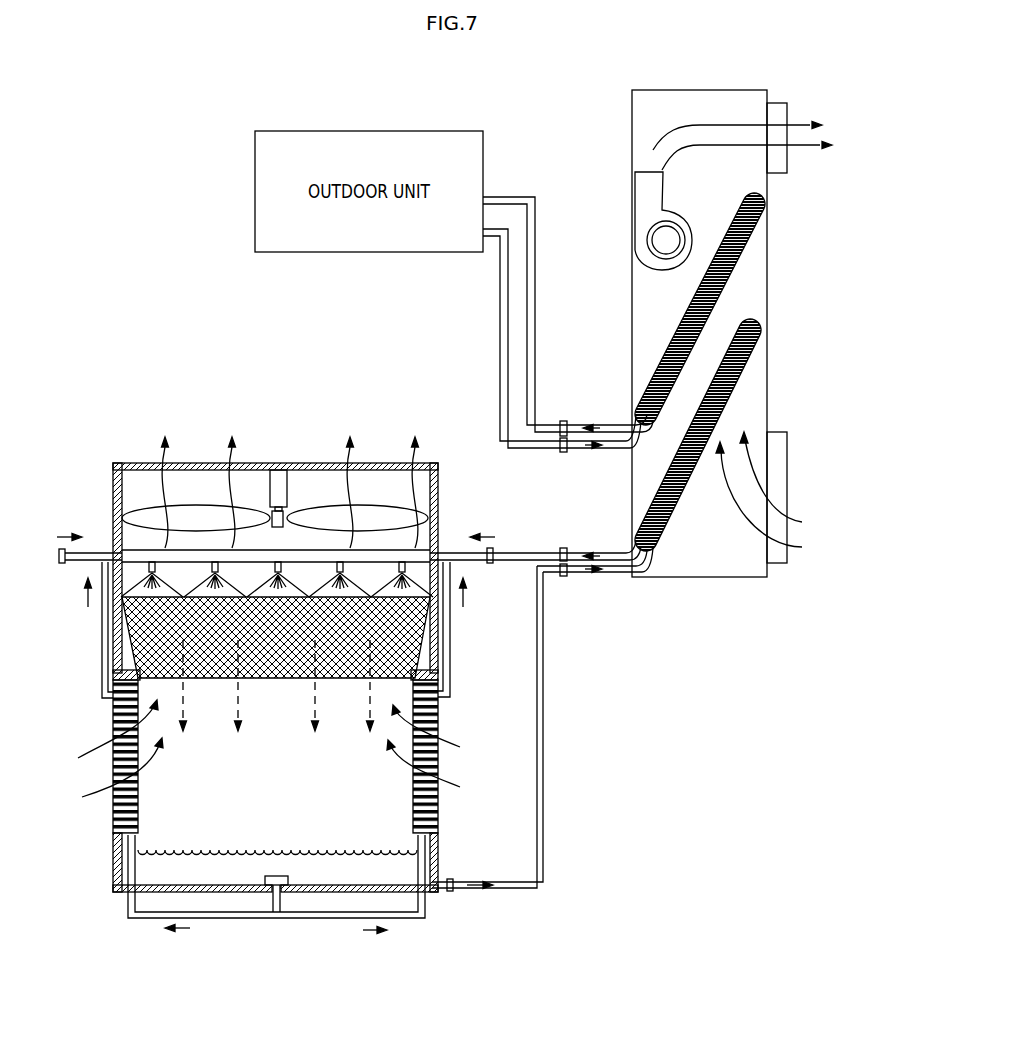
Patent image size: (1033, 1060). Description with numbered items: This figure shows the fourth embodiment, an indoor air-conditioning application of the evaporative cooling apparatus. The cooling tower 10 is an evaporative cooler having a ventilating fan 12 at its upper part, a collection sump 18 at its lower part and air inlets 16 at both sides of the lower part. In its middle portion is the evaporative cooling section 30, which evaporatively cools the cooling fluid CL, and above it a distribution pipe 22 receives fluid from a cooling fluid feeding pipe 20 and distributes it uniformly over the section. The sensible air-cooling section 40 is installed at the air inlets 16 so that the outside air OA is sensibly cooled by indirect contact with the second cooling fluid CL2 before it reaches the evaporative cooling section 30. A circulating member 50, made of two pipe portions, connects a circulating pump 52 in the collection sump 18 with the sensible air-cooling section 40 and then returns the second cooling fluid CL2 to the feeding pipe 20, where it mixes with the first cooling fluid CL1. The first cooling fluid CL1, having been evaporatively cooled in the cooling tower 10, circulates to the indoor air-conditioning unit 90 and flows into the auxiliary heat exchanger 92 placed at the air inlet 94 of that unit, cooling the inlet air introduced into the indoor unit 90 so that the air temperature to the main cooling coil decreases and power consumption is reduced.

The cooling tower 10 is at (391, 432).
The ventilating fan 12 is at (318, 503).
The air inlet 16 is at (440, 832).
The collection sump 18 is at (128, 900).
The cooling fluid feeding pipe 20 is at (457, 553).
The distribution pipe 22 is at (440, 527).
The evaporative cooling section 30 is at (400, 631).
The sensible air-cooling section 40 is at (457, 724).
The circulating member 50 is at (450, 653).
The circulating pump 52 is at (262, 882).
The indoor air-conditioning unit 90 is at (776, 277).
The auxiliary heat exchanger 92 is at (765, 352).
The air inlet 94 is at (773, 484).
The cooling fluid CL is at (113, 715).
The first cooling fluid CL1 is at (585, 556).
The second cooling fluid CL2 is at (367, 932).
The outside air OA is at (455, 745).